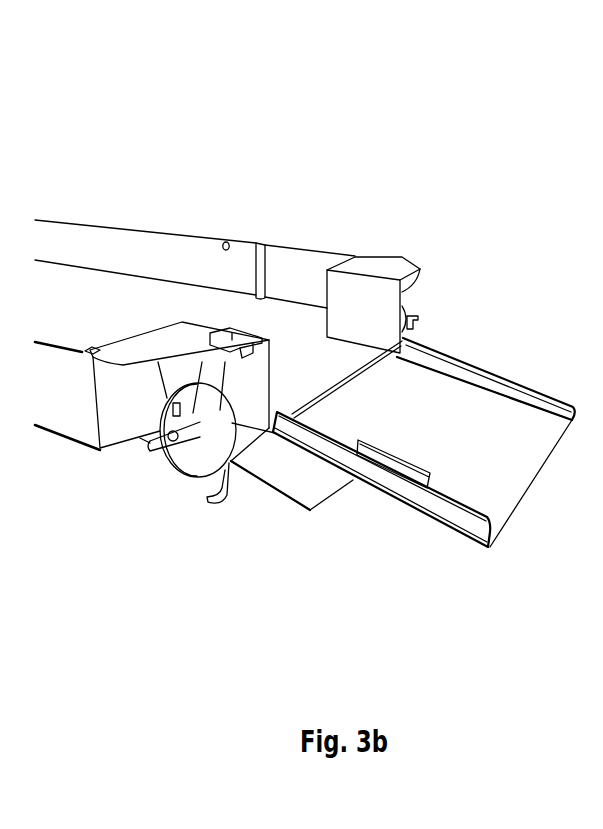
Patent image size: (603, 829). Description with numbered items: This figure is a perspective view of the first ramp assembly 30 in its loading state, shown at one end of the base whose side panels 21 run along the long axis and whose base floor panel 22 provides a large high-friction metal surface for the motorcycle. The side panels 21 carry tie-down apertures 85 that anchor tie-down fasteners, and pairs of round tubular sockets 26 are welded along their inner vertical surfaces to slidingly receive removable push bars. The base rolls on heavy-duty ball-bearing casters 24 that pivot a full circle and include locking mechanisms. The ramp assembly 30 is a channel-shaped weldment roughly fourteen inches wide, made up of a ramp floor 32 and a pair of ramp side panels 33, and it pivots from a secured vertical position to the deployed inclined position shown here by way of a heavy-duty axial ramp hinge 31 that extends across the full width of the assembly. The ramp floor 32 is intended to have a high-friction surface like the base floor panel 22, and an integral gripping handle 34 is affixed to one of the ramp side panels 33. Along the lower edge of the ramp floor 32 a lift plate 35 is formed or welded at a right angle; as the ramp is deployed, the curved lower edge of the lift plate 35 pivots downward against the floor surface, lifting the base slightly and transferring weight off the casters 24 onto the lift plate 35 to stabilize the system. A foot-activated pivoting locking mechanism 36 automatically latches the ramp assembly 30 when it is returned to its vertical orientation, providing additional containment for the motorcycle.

The side panel 21 is at (143, 242).
The base floor panel 22 is at (80, 295).
The caster 24 is at (408, 310).
The socket 26 is at (355, 257).
The first ramp assembly 30 is at (471, 106).
The ramp hinge 31 is at (408, 348).
The ramp floor 32 is at (497, 480).
The ramp side panel 33 is at (480, 383).
The handle 34 is at (387, 457).
The lift plate 35 is at (234, 478).
The locking mechanism 36 is at (232, 340).
The tie-down aperture 85 is at (222, 242).